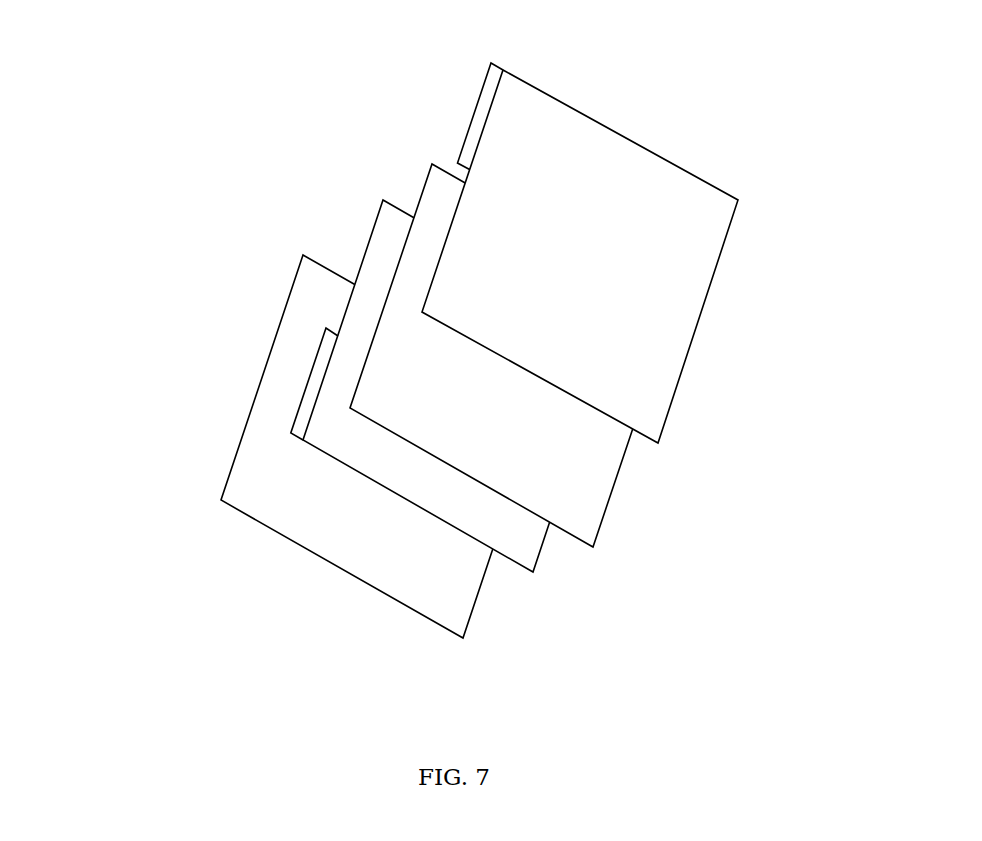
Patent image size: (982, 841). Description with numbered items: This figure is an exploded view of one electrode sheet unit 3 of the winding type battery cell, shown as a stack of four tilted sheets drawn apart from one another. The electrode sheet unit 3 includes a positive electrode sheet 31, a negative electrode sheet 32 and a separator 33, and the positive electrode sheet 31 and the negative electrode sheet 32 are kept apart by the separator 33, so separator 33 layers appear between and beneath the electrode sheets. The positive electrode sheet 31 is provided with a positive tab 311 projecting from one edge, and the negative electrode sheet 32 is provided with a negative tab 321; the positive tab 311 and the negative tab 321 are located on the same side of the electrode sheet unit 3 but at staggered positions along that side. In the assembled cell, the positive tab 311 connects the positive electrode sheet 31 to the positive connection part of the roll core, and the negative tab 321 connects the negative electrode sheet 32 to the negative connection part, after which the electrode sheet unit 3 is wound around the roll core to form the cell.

The electrode sheet unit 3 is at (220, 162).
The positive electrode sheet 31 is at (677, 293).
The positive tab 311 is at (472, 112).
The negative electrode sheet 32 is at (523, 537).
The negative tab 321 is at (307, 380).
The separator 33 is at (587, 472).